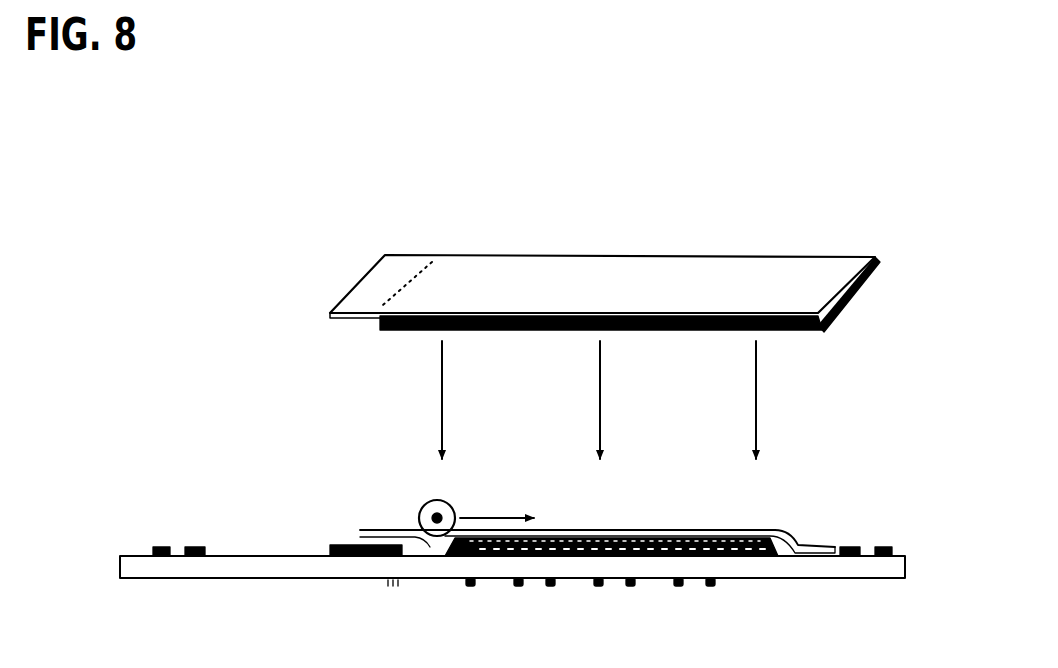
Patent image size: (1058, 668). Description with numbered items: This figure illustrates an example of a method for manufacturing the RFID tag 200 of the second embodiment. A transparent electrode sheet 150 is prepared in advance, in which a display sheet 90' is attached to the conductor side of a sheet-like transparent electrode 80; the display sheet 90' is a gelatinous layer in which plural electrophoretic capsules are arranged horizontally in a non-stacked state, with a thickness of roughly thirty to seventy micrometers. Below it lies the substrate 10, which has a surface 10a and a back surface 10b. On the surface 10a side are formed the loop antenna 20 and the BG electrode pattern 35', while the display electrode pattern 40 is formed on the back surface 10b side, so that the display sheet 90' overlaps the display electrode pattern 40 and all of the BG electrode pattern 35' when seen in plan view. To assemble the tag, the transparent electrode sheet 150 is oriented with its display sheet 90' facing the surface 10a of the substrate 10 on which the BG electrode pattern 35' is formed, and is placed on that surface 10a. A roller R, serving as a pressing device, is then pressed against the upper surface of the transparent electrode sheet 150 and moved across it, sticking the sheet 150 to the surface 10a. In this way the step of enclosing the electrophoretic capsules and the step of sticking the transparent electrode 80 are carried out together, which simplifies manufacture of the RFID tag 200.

The transparent electrode sheet 150 is at (387, 232).
The transparent electrode 80 is at (812, 268).
The display sheet 90' is at (669, 406).
The RFID tag 200 is at (119, 502).
The substrate 10 is at (882, 578).
The surface of the substrate 10a is at (246, 553).
The back surface of the substrate 10b is at (249, 580).
The loop antenna 20 is at (881, 546).
The display electrode pattern 40 is at (552, 581).
The BG electrode pattern 35' is at (583, 509).
The roller R is at (430, 504).